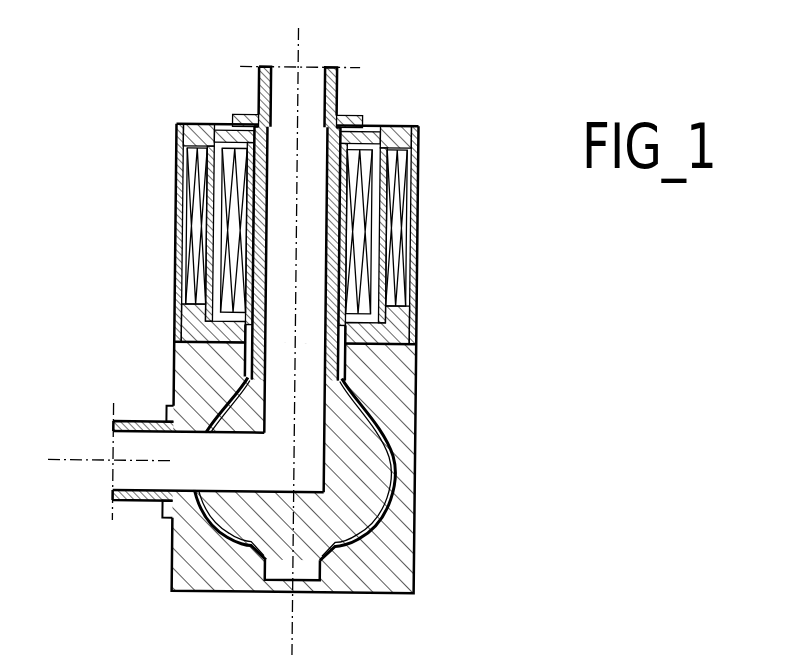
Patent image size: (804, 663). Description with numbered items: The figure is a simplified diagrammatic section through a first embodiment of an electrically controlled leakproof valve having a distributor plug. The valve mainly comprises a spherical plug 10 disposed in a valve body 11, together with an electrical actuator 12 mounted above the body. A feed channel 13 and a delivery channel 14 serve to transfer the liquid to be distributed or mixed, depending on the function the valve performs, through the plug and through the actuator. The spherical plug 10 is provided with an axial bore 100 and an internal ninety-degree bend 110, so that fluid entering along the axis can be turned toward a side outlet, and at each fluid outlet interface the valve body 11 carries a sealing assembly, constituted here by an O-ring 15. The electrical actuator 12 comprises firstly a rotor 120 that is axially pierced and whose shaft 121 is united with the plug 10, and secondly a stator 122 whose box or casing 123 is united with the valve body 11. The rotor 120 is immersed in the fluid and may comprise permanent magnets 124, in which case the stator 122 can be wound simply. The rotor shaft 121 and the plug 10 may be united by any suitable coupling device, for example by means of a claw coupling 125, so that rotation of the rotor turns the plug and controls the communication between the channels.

The spherical plug 10 is at (380, 463).
The valve body 11 is at (392, 553).
The electrical actuator 12 is at (161, 237).
The feed channel 13 is at (334, 92).
The delivery channel 14 is at (137, 420).
The O-ring 15 is at (170, 518).
The axial bore 100 is at (262, 388).
The internal 90° bend 110 is at (283, 492).
The rotor 120 is at (363, 125).
The shaft 121 is at (253, 122).
The stator 122 is at (392, 160).
The box or casing 123 is at (196, 324).
The permanent magnets 124 is at (208, 150).
The claw coupling 125 is at (343, 356).